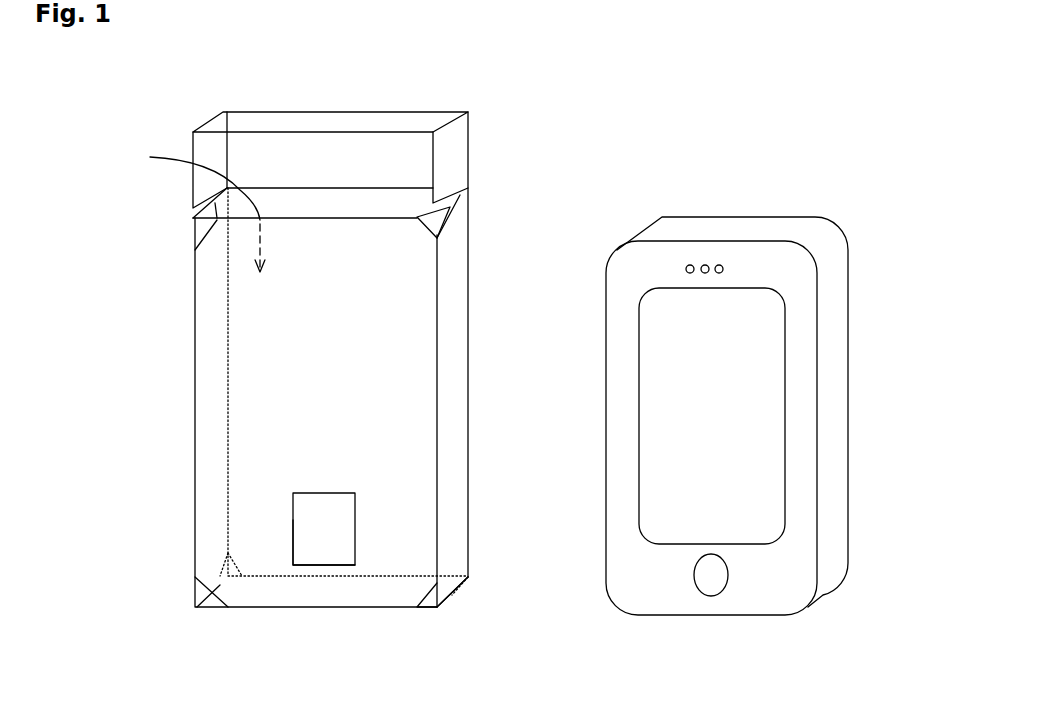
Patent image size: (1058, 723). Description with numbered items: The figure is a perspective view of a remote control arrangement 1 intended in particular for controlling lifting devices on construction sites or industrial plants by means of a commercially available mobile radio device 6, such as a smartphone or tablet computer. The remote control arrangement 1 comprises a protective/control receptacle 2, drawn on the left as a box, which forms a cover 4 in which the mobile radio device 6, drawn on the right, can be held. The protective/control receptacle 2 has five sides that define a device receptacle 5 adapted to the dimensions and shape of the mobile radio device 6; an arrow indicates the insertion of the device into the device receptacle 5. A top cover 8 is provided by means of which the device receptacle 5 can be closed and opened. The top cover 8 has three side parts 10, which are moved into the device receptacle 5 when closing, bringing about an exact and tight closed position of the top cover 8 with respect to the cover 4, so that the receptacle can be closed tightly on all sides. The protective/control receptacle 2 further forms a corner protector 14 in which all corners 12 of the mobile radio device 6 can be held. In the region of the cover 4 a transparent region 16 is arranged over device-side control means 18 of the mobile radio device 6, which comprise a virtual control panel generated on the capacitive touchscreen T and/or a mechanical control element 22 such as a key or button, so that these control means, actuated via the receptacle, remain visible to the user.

The remote control arrangement 1 is at (688, 78).
The protective/control receptacle 2 is at (170, 127).
The cover 4 is at (195, 352).
The device receptacle 5 is at (194, 208).
The mobile radio device 6 is at (762, 226).
The top cover 8 is at (383, 122).
The side parts 10 is at (453, 163).
The corners 12 is at (808, 607).
The corner protector 14 is at (452, 593).
The transparent region 16 is at (282, 515).
The device-side control means 18 is at (295, 542).
The mechanical control element 22 is at (707, 583).
The capacitive touchscreen T is at (742, 363).